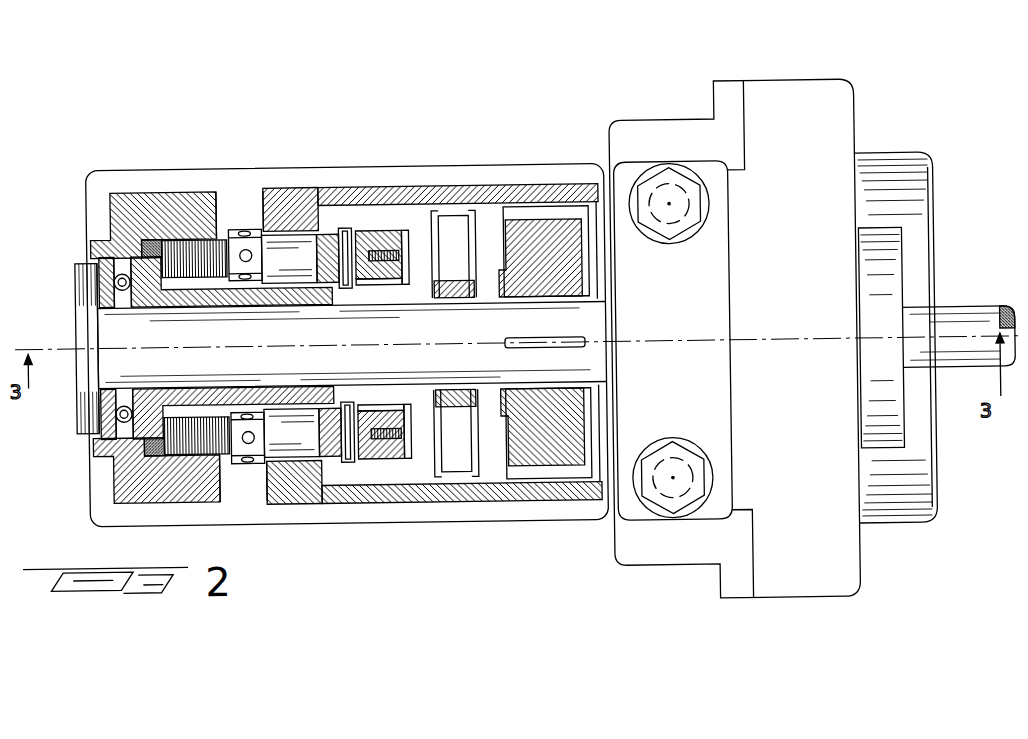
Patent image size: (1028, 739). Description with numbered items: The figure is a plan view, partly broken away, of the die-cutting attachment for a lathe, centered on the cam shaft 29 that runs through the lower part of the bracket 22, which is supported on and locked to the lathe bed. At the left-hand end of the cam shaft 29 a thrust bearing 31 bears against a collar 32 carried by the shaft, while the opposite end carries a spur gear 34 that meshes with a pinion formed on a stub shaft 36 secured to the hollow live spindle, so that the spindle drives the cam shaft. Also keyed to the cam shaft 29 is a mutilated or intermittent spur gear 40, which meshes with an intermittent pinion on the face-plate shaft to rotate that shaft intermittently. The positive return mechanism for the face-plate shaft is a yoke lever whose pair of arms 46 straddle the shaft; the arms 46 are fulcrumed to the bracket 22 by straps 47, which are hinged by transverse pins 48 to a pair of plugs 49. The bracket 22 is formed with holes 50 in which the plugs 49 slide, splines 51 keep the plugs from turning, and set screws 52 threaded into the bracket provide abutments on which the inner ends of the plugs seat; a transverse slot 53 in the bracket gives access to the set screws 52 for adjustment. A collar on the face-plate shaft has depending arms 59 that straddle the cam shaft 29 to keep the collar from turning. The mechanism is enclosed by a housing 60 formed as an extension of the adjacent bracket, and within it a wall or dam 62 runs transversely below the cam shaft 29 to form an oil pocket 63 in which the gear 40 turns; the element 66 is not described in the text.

The bracket 22 is at (102, 503).
The cam shaft 29 is at (352, 345).
The thrust bearing 31 is at (107, 262).
The collar 32 is at (90, 325).
The spur gear 34 is at (905, 252).
The stub shaft 36 is at (972, 316).
The intermittent spur gear 40 is at (572, 247).
The arms 46 is at (387, 229).
The straps 47 is at (410, 229).
The transverse pins 48 is at (348, 226).
The plugs 49 is at (301, 345).
The holes 50 is at (300, 228).
The splines 51 is at (303, 280).
The set screws 52 is at (238, 228).
The transverse slot 53 is at (248, 200).
The depending arms 59 is at (470, 282).
The housing 60 is at (481, 498).
The wall or dam 62 is at (456, 433).
The oil pocket 63 is at (490, 262).
The mounting plate 66 is at (813, 96).